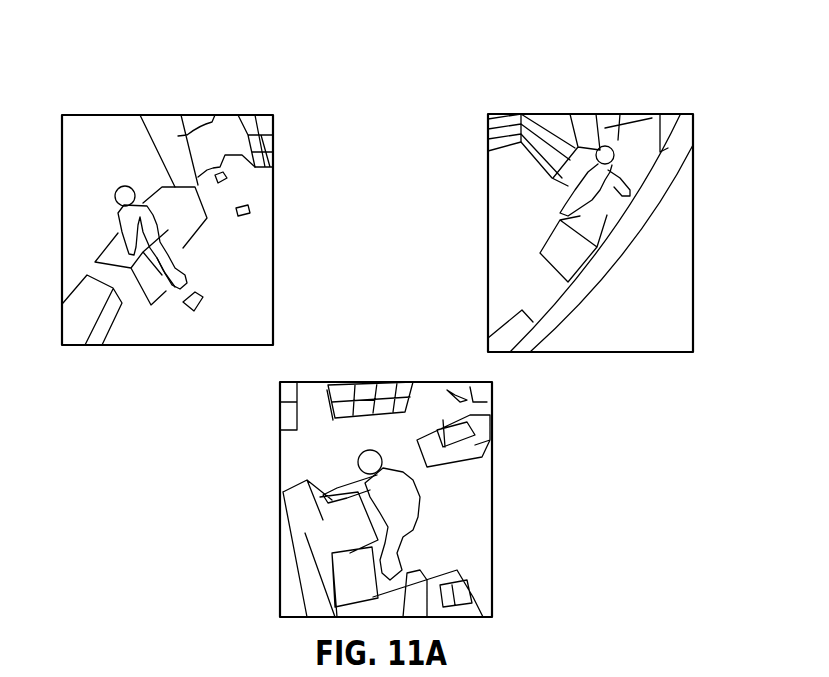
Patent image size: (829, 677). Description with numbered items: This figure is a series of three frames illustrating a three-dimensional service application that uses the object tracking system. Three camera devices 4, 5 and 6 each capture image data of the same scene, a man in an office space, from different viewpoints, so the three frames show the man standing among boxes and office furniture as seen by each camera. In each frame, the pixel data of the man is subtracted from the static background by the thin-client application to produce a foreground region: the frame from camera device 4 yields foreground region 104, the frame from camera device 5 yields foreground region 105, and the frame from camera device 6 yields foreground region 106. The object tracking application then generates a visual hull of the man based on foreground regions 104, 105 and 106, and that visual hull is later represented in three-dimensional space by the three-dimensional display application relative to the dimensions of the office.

The camera device 4 is at (273, 175).
The foreground region 104 is at (190, 260).
The camera device 5 is at (488, 260).
The foreground region 105 is at (555, 202).
The camera device 6 is at (357, 380).
The foreground region 106 is at (418, 492).